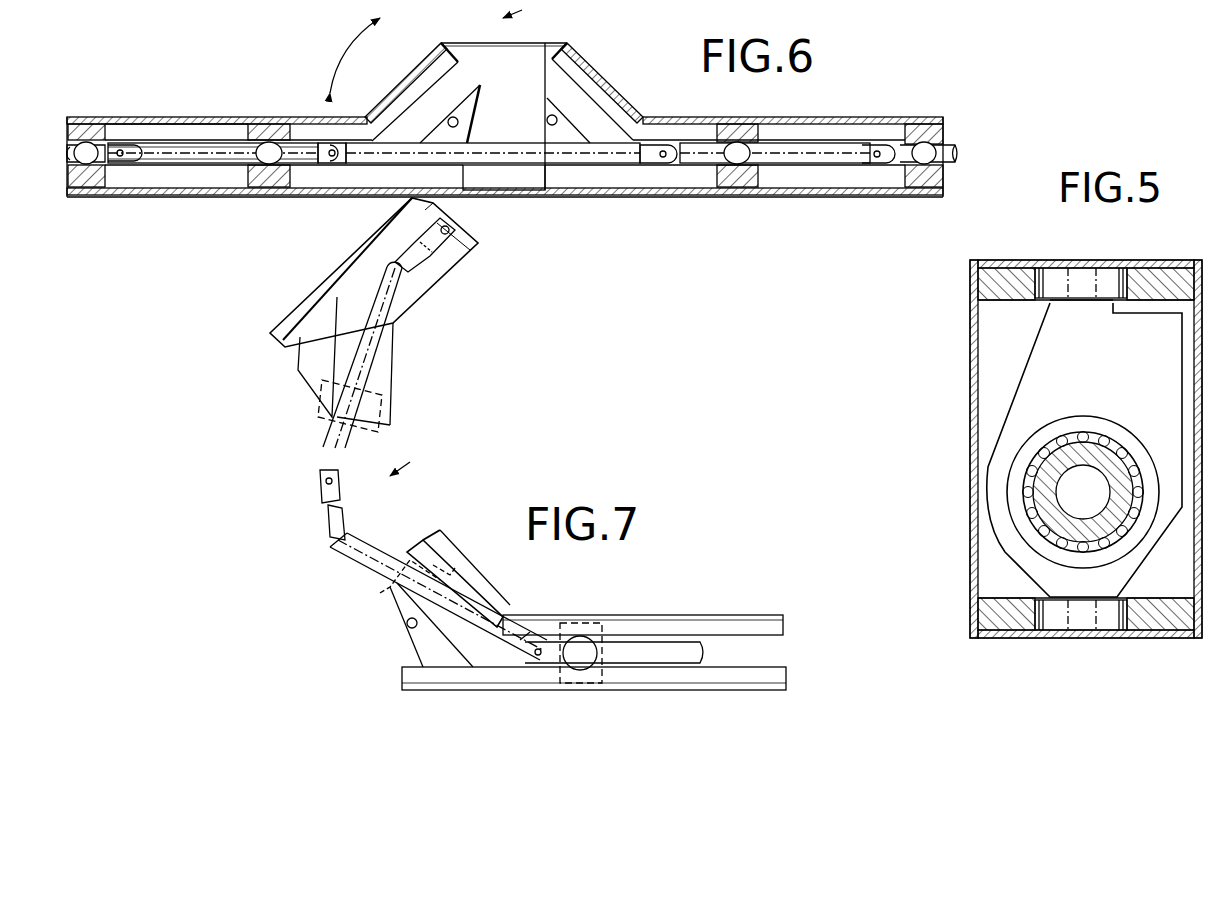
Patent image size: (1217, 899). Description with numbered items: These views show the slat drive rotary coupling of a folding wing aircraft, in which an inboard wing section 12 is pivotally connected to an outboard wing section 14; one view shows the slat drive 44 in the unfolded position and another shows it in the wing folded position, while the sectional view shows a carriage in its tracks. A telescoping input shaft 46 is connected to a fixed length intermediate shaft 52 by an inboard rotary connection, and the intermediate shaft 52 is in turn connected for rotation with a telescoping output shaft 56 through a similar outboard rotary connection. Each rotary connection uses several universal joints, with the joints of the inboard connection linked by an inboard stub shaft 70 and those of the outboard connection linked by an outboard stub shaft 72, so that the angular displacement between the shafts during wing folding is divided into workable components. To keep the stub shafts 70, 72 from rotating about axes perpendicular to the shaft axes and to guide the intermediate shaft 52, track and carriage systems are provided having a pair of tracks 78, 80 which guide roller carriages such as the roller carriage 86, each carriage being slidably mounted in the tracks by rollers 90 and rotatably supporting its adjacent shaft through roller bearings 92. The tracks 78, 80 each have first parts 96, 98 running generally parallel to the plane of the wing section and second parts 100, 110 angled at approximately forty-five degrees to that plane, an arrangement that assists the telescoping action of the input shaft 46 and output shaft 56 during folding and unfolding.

In FIG. 6, the inboard wing section 12 is at (860, 118).
In FIG. 7, the inboard wing section 12 is at (688, 613).
In FIG. 6, the outboard wing section 14 is at (233, 118).
In FIG. 7, the outboard wing section 14 is at (428, 298).
In FIG. 6, the actuator assembly 44 is at (523, 9).
In FIG. 7, the actuator assembly 44 is at (411, 465).
In FIG. 6, the telescoping input shaft 46 is at (955, 145).
In FIG. 7, the telescoping input shaft 46 is at (622, 662).
In FIG. 6, the intermediate shaft 52 is at (498, 142).
In FIG. 7, the intermediate shaft 52 is at (320, 490).
In FIG. 6, the telescoping output shaft 56 is at (68, 160).
In FIG. 6, the inboard stub shaft 70 is at (810, 142).
In FIG. 7, the inboard stub shaft 70 is at (500, 596).
In FIG. 6, the outboard stub shaft 72 is at (160, 142).
In FIG. 7, the outboard stub shaft 72 is at (392, 352).
In FIG. 6, the track 78 is at (840, 178).
In FIG. 7, the track 78 is at (724, 622).
In FIG. 6, the track 80 is at (204, 178).
In FIG. 5, the track 80 is at (1155, 268).
In FIG. 7, the track 80 is at (478, 243).
In FIG. 5, the roller carriage 86 is at (1042, 334).
In FIG. 5, the rollers 90 is at (1058, 268).
In FIG. 5, the roller bearings 92 is at (1093, 420).
In FIG. 6, the first track part 96 is at (686, 136).
In FIG. 6, the first track part 98 is at (197, 130).
In FIG. 6, the second track part 100 is at (618, 108).
In FIG. 7, the second track part 100 is at (456, 580).
In FIG. 6, the second track part 110 is at (394, 100).
In FIG. 7, the second track part 110 is at (297, 372).